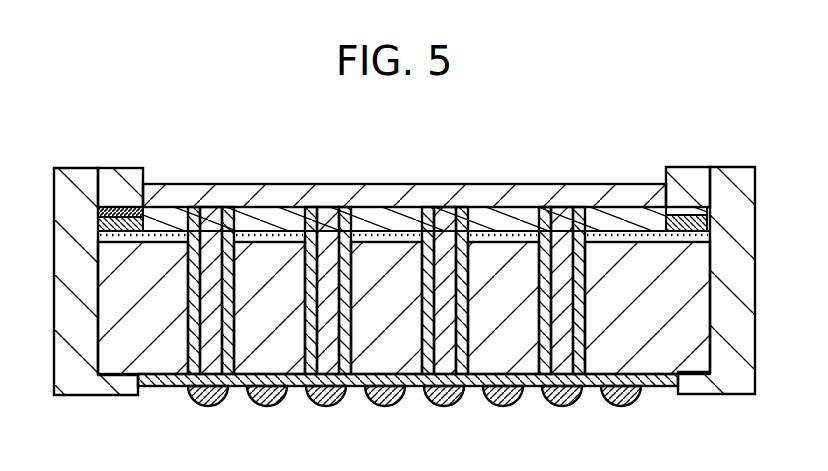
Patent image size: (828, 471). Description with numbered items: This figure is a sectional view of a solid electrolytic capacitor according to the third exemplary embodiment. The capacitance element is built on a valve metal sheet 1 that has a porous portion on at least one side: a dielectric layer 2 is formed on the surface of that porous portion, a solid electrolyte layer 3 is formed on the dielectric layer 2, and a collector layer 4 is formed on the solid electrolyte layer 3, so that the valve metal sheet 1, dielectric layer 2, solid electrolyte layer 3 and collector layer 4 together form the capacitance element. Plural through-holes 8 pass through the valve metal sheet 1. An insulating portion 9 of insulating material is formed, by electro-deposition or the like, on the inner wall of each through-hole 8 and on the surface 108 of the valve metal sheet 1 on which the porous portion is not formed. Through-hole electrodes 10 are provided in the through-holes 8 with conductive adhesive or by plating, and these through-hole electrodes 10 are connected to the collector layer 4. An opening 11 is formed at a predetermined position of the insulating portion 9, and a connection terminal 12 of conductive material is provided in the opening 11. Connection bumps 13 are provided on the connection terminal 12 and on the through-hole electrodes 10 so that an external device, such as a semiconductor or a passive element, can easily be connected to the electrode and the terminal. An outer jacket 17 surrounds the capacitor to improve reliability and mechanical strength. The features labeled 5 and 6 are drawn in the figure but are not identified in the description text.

The valve metal sheet 1 is at (632, 257).
The dielectric layer 2 is at (487, 232).
The solid electrolyte layer 3 is at (370, 220).
The collector layer 4 is at (274, 194).
The frame step portion 5 is at (123, 178).
The sealing member 6 is at (110, 210).
The through-hole 8 is at (590, 358).
The insulating portion 9 is at (535, 388).
The through-hole electrode 10 is at (450, 353).
The opening 11 is at (362, 403).
The connection terminal 12 is at (278, 403).
The connection bump 13 is at (213, 404).
The outer jacket 17 is at (730, 182).
The surface of valve metal sheet 108 is at (172, 378).